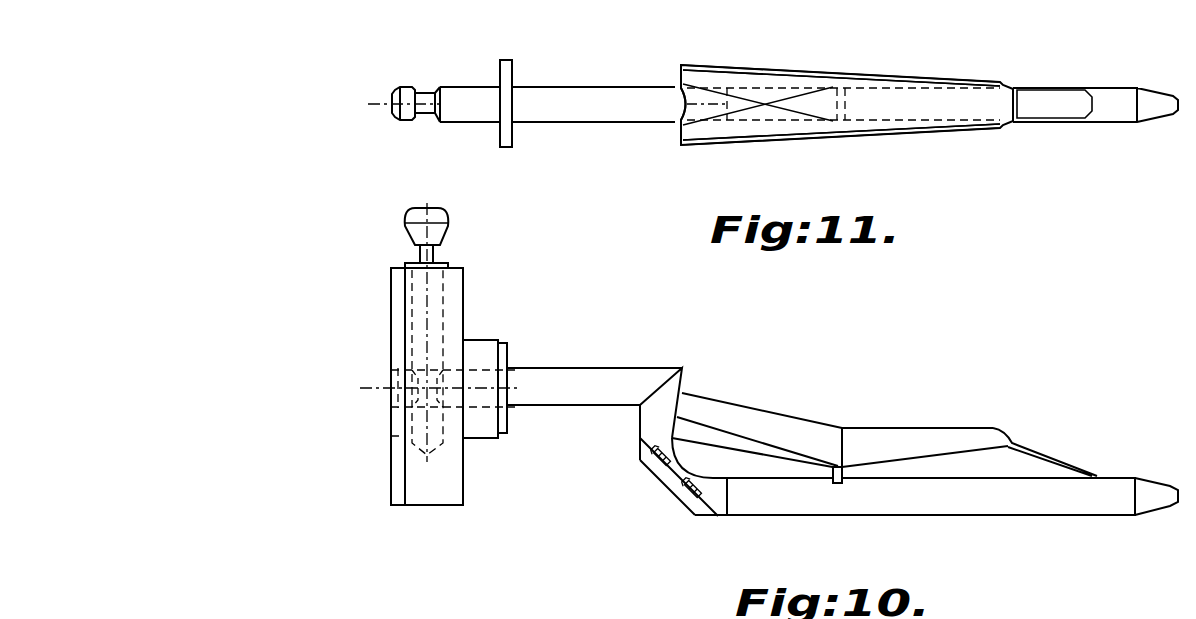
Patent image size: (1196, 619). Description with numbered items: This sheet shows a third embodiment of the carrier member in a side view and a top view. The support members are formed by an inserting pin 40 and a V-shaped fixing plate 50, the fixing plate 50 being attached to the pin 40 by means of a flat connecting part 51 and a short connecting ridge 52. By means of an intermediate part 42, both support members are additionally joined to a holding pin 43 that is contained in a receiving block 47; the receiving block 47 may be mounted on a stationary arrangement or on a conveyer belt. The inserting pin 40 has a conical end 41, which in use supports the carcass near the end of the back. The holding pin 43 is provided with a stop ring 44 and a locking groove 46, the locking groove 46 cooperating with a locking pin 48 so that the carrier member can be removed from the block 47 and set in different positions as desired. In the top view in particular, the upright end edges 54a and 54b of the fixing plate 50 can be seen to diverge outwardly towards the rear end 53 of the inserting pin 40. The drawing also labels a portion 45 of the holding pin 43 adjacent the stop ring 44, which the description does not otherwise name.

In FIG. 10, the pin 40 is at (942, 502).
In FIG. 11, the conical end 41 is at (1160, 100).
In FIG. 10, the conical end 41 is at (1150, 497).
In FIG. 10, the intermediate part 42 is at (674, 486).
In FIG. 11, the holding pin 43 is at (593, 98).
In FIG. 10, the holding pin 43 is at (558, 390).
In FIG. 11, the stop ring 44 is at (511, 67).
In FIG. 10, the stop ring 44 is at (506, 351).
In FIG. 11, the shaft portion 45 is at (470, 112).
In FIG. 10, the shaft portion 45 is at (483, 398).
In FIG. 11, the locking groove 46 is at (427, 84).
In FIG. 10, the receiving block 47 is at (455, 291).
In FIG. 10, the locking pin 48 is at (441, 216).
In FIG. 11, the V-shaped fixing plate 50 is at (834, 91).
In FIG. 10, the V-shaped fixing plate 50 is at (884, 419).
In FIG. 10, the flat connecting part 51 is at (1046, 449).
In FIG. 10, the short connecting ridge 52 is at (843, 484).
In FIG. 11, the rear end 53 is at (677, 85).
In FIG. 11, the upright end edge 54a is at (918, 77).
In FIG. 11, the upright end edge 54b is at (908, 134).
In FIG. 10, the upright end edge 54b is at (915, 427).